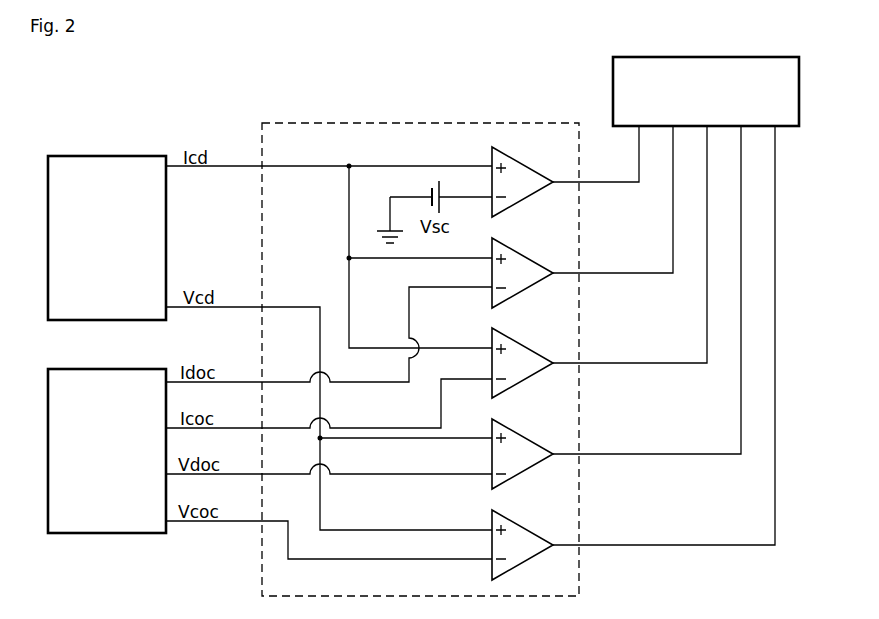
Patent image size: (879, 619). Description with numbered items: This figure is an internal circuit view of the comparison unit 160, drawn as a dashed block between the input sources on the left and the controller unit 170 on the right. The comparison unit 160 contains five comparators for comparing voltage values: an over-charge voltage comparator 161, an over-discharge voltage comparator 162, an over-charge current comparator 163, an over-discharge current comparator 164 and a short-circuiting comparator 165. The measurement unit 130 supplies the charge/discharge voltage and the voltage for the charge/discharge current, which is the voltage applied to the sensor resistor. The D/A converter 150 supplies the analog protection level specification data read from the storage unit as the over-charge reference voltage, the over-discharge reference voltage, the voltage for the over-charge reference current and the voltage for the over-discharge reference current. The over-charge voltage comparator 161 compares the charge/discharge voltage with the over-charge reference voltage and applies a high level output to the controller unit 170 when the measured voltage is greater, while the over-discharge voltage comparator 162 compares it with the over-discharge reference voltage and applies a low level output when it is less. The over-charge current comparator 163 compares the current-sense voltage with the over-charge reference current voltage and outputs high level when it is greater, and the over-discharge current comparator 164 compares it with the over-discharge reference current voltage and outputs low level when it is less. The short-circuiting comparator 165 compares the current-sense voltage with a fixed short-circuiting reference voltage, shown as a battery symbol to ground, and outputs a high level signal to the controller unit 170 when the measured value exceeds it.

The measurement unit 130 is at (105, 156).
The D/A converter 150 is at (106, 534).
The comparison unit 160 is at (424, 122).
The over-charge voltage comparator 161 is at (525, 529).
The over-discharge voltage comparator 162 is at (525, 438).
The over-charge current comparator 163 is at (525, 347).
The over-discharge current comparator 164 is at (525, 257).
The short-circuiting comparator 165 is at (525, 166).
The controller unit 170 is at (800, 93).